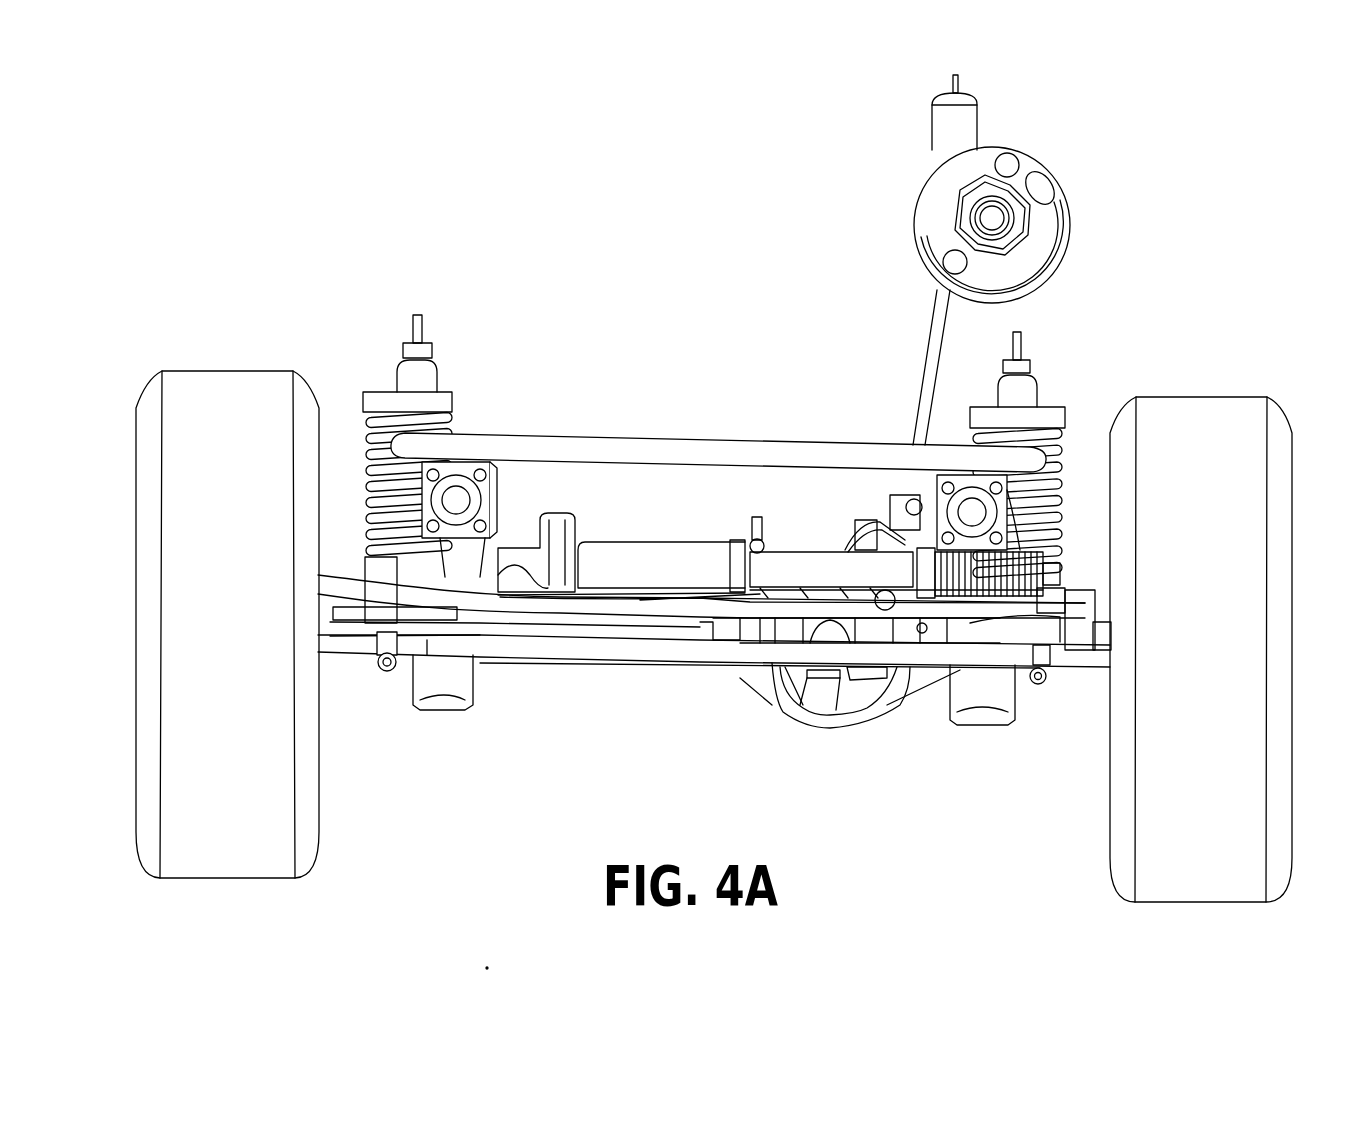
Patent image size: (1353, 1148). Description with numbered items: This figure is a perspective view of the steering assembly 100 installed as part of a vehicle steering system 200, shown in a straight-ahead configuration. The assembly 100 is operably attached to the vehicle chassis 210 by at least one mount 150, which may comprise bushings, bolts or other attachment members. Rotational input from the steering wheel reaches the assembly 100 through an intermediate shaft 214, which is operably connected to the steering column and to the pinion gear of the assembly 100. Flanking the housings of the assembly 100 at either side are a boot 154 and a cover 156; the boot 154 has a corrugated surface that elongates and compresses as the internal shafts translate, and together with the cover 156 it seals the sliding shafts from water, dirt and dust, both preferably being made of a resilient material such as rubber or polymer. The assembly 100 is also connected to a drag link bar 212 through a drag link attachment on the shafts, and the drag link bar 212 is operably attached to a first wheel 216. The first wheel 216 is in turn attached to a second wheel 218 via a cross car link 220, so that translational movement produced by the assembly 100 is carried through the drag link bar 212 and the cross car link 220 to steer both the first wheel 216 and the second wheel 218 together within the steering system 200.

The assembly 100 is at (800, 548).
The mount 150 is at (898, 494).
The boot 154 is at (958, 595).
The cover 156 is at (655, 572).
The vehicle steering system 200 is at (648, 683).
The vehicle chassis 210 is at (972, 510).
The drag link bar 212 is at (753, 606).
The intermediate shaft 214 is at (930, 348).
The first wheel 216 is at (228, 396).
The second wheel 218 is at (1196, 445).
The cross car link 220 is at (553, 645).